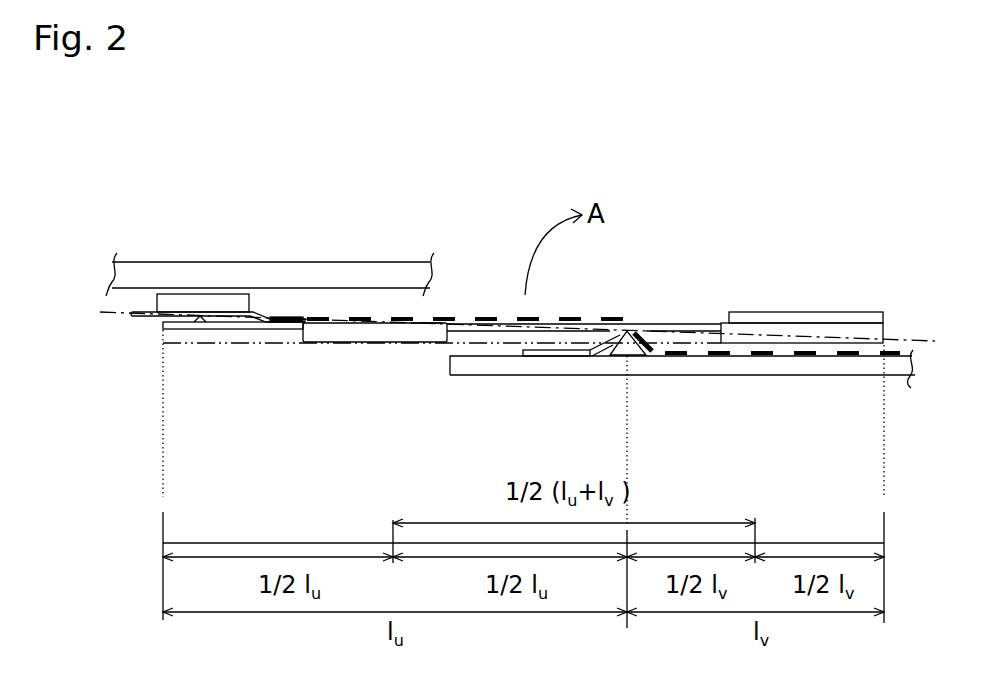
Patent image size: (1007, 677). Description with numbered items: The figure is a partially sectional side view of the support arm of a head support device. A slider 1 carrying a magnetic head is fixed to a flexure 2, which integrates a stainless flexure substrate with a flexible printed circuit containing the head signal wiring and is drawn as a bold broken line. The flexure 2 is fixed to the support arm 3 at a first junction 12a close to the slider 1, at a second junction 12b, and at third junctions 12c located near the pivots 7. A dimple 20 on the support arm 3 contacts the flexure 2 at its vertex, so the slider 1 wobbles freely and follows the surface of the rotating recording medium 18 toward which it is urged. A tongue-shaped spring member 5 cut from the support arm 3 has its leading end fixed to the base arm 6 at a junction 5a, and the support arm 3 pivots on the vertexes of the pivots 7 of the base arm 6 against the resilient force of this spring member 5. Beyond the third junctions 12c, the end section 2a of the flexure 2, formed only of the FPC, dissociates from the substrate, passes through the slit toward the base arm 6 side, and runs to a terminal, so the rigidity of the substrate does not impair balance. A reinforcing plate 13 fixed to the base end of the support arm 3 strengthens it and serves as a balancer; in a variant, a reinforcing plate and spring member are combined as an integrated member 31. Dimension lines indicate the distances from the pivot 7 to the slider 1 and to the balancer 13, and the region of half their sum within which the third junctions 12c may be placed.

The slider 1 is at (228, 303).
The flexure 2 is at (395, 323).
The end section 2a is at (813, 355).
The support arm 3 is at (238, 329).
The spring member 5 is at (660, 330).
The junction 5a is at (565, 352).
The base arm 6 is at (515, 363).
The pivot 7 is at (626, 356).
The first junction 12a is at (432, 318).
The second junction 12b is at (558, 318).
The third junction 12c is at (628, 331).
The reinforcing plate 13 is at (802, 312).
The recording medium 18 is at (335, 262).
The dimple 20 is at (200, 318).
The integrated member 31 is at (427, 323).